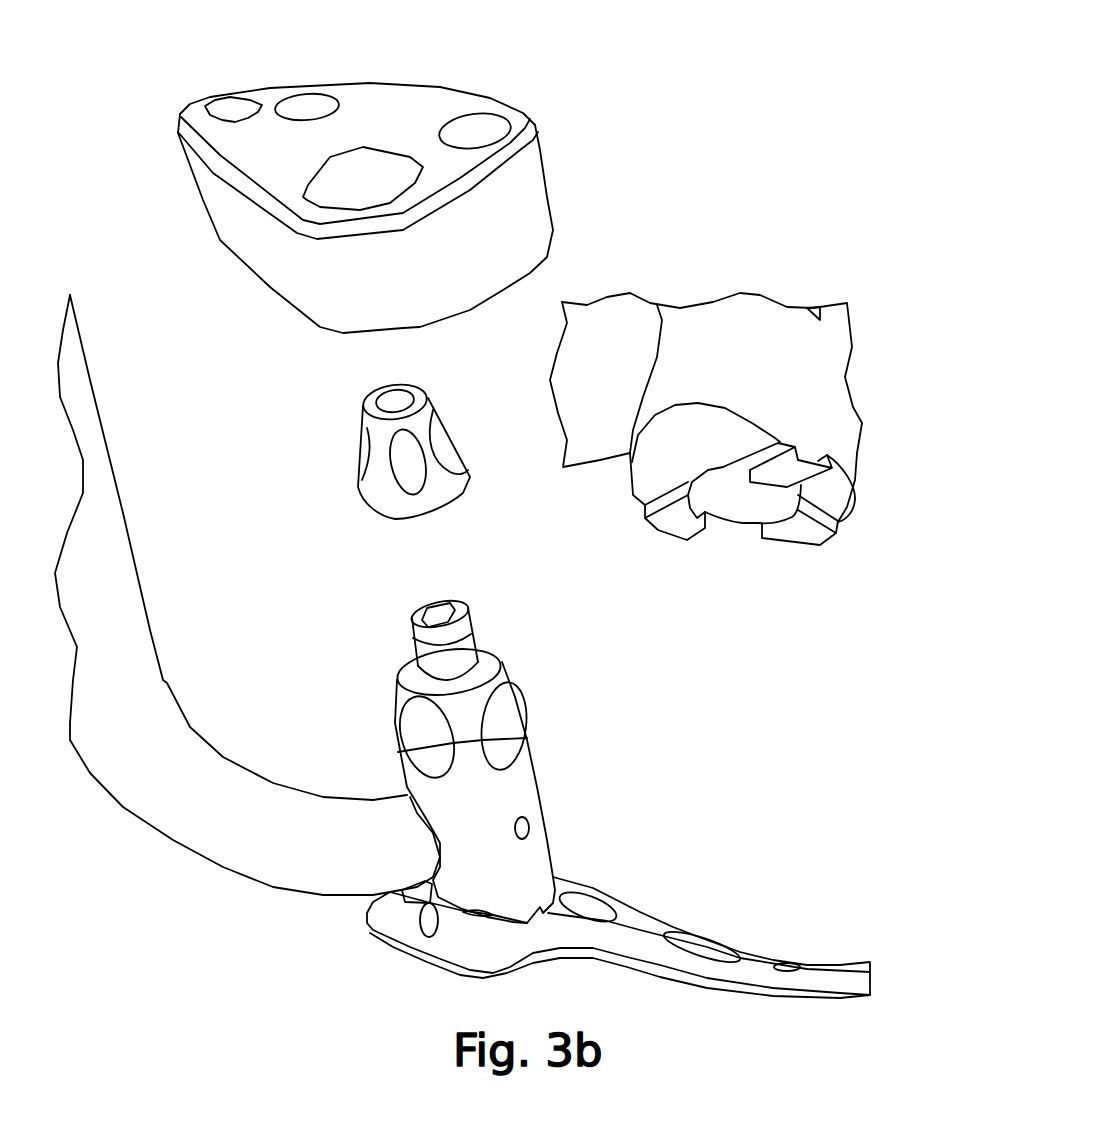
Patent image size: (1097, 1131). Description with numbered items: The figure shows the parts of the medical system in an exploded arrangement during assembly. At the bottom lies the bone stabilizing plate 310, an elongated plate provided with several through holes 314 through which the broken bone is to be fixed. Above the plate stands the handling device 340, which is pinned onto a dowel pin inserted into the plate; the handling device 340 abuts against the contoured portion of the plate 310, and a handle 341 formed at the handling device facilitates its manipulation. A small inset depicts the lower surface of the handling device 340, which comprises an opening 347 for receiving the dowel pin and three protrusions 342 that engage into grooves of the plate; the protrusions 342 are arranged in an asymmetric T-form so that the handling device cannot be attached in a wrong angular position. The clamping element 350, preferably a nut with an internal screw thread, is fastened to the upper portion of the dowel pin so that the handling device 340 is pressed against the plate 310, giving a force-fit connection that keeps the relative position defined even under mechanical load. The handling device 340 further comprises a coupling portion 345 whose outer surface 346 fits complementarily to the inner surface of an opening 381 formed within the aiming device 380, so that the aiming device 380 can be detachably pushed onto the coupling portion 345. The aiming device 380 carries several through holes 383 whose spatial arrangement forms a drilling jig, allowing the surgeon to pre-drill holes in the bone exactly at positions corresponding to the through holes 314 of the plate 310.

The bone stabilizing plate 310 is at (618, 910).
The through holes 314 is at (588, 905).
The handling device 340 is at (620, 608).
The handle 341 is at (218, 850).
The protrusions 342 is at (810, 453).
The coupling portion 345 is at (523, 642).
The outer surface 346 is at (412, 747).
The opening 347 is at (732, 512).
The clamping element 350 is at (372, 498).
The aiming device 380 is at (412, 168).
The opening 381 is at (372, 168).
The through holes 383 is at (313, 102).